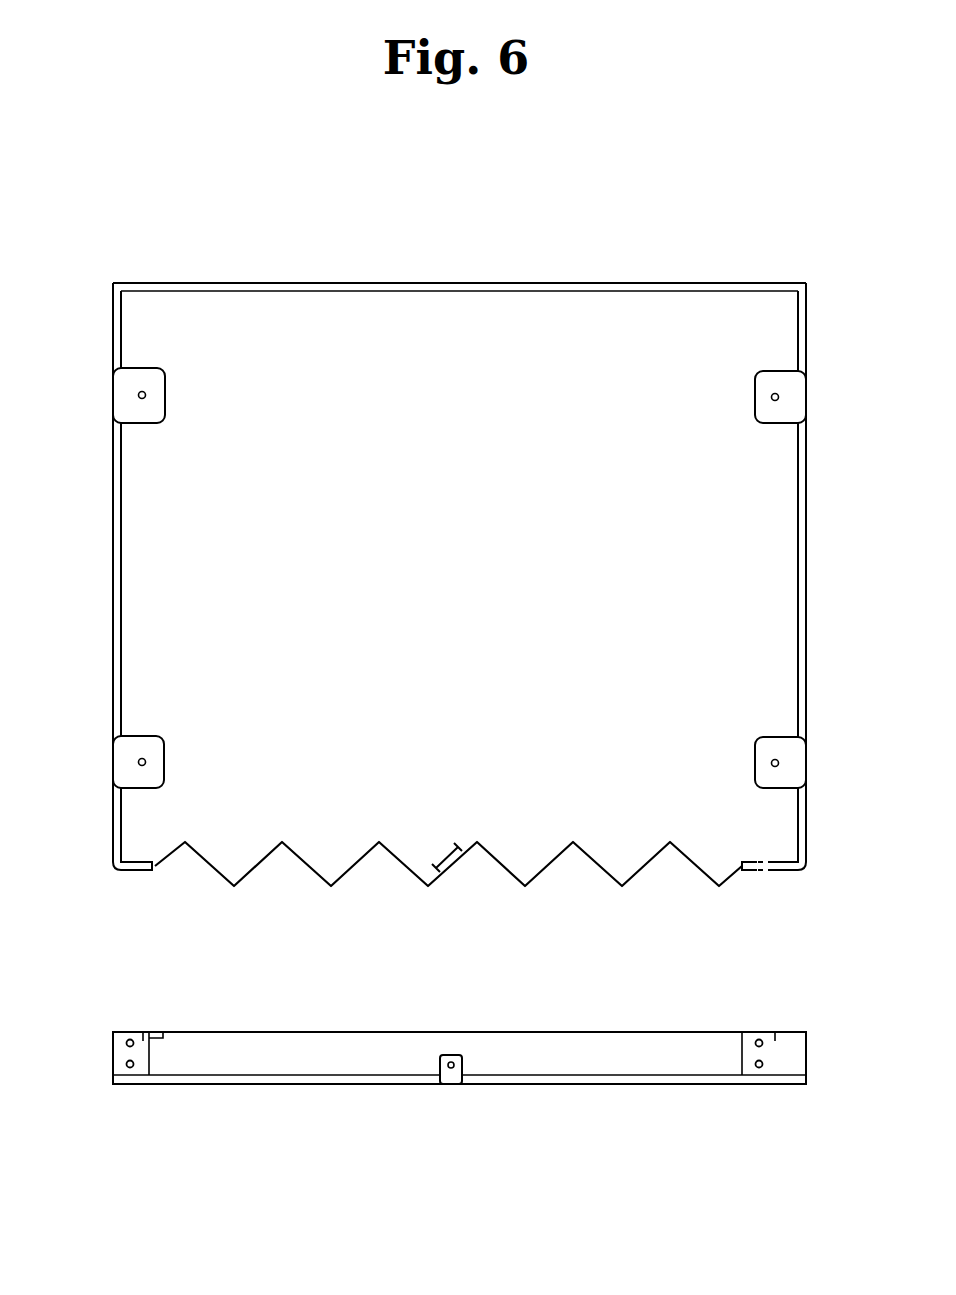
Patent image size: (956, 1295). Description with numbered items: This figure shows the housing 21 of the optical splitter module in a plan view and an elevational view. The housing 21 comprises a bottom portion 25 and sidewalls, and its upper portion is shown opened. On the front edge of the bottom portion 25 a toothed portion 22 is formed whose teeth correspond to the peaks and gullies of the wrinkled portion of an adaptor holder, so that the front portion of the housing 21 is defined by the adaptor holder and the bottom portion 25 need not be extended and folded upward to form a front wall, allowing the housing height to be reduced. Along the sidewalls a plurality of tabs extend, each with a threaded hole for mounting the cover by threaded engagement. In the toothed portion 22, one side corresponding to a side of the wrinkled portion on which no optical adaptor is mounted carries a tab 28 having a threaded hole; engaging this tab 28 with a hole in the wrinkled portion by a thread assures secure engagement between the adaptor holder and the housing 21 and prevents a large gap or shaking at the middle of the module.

The housing 21 is at (469, 268).
The toothed portion 22 is at (740, 910).
The bottom portion 25 is at (475, 573).
The tab 28 is at (451, 1055).